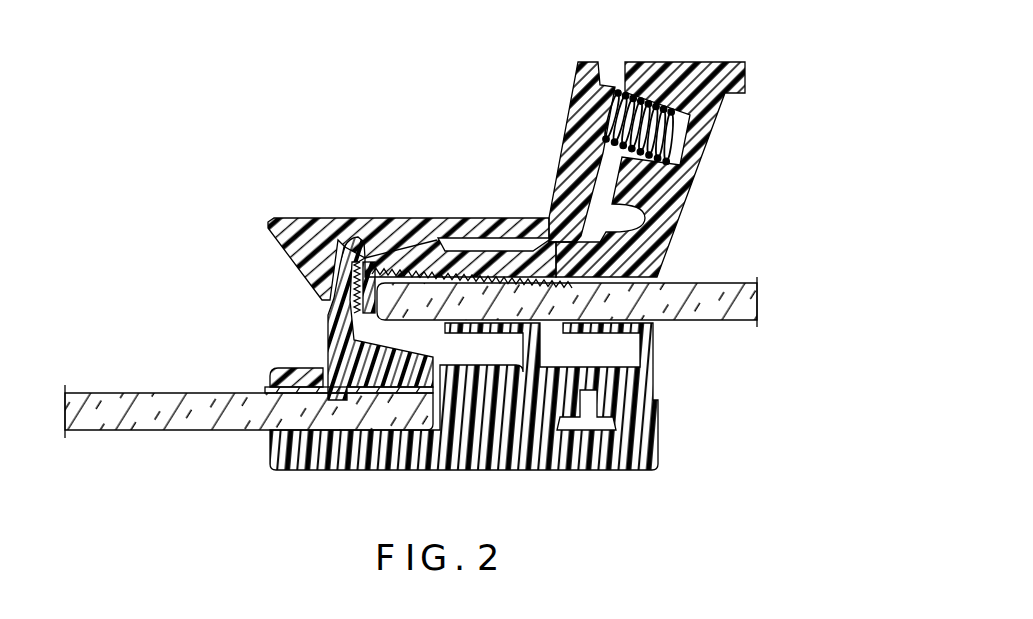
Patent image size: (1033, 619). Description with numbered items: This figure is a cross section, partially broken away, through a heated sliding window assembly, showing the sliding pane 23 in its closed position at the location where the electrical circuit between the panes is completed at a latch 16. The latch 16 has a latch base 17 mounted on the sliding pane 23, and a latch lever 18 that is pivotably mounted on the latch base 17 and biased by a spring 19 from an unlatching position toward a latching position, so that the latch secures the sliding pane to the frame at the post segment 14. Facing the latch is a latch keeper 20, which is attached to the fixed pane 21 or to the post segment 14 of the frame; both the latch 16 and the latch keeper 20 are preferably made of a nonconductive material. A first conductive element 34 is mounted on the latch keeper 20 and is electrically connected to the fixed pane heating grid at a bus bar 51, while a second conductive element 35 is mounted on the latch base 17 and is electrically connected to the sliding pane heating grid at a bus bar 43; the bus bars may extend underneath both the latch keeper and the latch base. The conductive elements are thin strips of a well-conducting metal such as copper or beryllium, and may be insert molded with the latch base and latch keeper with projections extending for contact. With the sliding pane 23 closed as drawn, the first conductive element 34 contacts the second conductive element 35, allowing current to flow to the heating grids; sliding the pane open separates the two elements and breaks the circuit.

The post segment 14 is at (660, 445).
The latch 16 is at (517, 181).
The latch base 17 is at (673, 207).
The latch lever 18 is at (571, 118).
The spring 19 is at (700, 148).
The latch keeper 20 is at (330, 325).
The fixed pane 21 is at (167, 420).
The sliding pane 23 is at (703, 292).
The first conductive element 34 is at (298, 368).
The second conductive element 35 is at (365, 255).
The bus bar 43 is at (562, 285).
The bus bar 51 is at (265, 388).